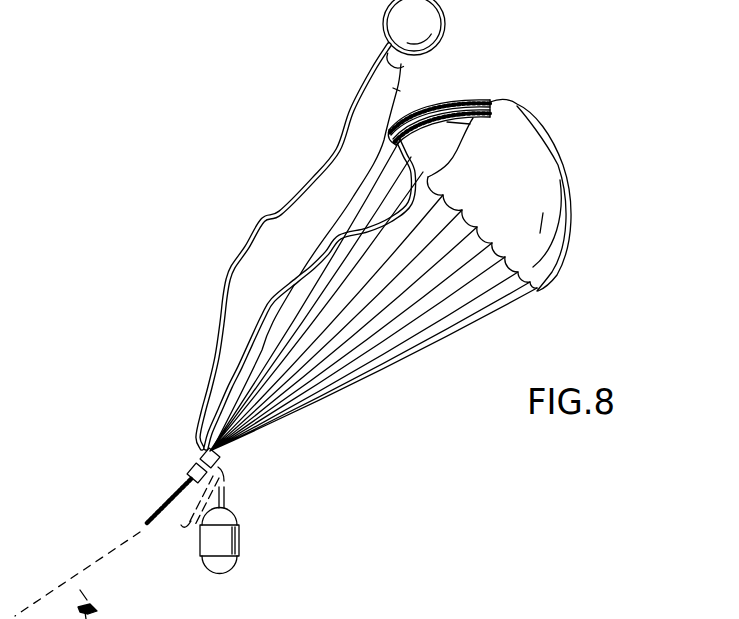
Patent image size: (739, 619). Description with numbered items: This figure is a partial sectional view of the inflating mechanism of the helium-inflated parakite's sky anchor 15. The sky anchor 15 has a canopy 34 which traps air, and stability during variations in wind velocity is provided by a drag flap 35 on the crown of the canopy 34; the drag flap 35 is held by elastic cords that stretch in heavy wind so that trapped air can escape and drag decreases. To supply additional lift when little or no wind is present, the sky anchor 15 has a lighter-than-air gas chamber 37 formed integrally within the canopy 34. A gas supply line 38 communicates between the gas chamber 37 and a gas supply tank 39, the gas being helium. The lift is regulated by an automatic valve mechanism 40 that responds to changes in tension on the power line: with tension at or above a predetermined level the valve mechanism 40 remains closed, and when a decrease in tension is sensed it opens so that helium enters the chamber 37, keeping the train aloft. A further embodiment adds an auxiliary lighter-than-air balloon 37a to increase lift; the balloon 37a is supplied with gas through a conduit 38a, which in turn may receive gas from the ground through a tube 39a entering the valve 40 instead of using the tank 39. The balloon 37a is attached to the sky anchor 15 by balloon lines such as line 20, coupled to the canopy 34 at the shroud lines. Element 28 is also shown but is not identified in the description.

The sky anchor 15 is at (356, 163).
The balloon line 20 is at (389, 44).
The tether rope 28 is at (162, 503).
The canopy 34 is at (518, 102).
The drag flap 35 is at (541, 140).
The lighter-than-air gas chamber 37 is at (418, 105).
The balloon 37a is at (444, 19).
The gas supply line 38 is at (272, 304).
The conduit 38a is at (272, 217).
The gas supply tank 39 is at (239, 538).
The tube 39a is at (186, 527).
The automatic valve mechanism 40 is at (200, 456).